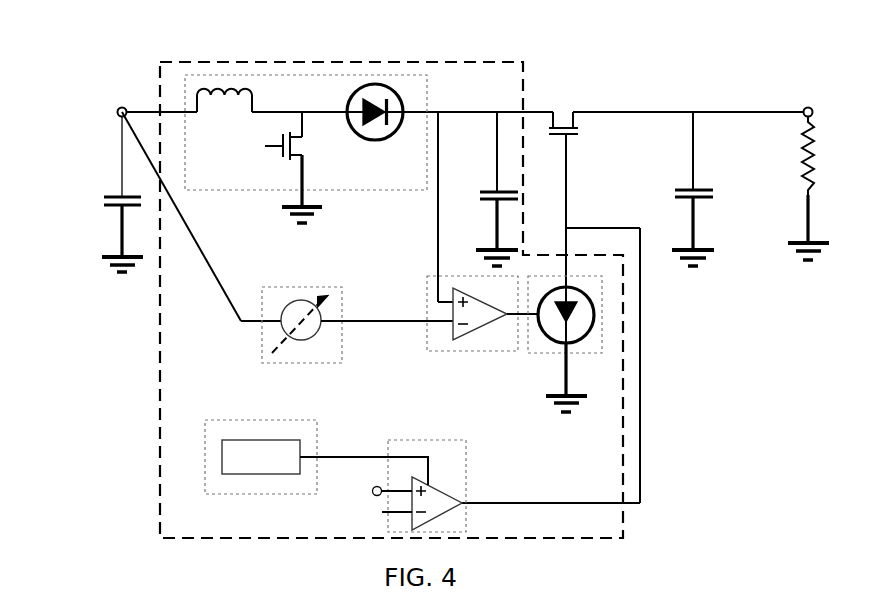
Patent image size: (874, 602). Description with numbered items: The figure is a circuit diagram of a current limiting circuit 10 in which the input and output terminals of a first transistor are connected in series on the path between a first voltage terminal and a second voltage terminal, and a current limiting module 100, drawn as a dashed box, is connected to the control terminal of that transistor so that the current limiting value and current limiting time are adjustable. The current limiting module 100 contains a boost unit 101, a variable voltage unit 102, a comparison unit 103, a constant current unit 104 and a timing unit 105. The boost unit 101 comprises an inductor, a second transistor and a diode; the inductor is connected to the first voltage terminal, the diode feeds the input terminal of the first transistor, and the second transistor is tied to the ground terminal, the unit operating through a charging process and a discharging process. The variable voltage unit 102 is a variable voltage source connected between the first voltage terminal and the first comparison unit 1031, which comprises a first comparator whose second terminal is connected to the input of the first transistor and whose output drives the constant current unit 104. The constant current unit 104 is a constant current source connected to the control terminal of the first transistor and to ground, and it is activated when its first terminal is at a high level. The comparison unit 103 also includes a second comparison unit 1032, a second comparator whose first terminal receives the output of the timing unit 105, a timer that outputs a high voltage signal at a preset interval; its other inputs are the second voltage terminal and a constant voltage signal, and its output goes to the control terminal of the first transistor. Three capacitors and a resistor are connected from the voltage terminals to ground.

The current limiting circuit 10 is at (58, 115).
The current limiting module 100 is at (160, 400).
The boost unit 101 is at (282, 78).
The variable voltage unit 102 is at (298, 286).
The comparison unit 103 is at (533, 408).
The first comparison unit 1031 is at (483, 351).
The second comparison unit 1032 is at (466, 468).
The constant current unit 104 is at (602, 346).
The timing unit 105 is at (262, 420).